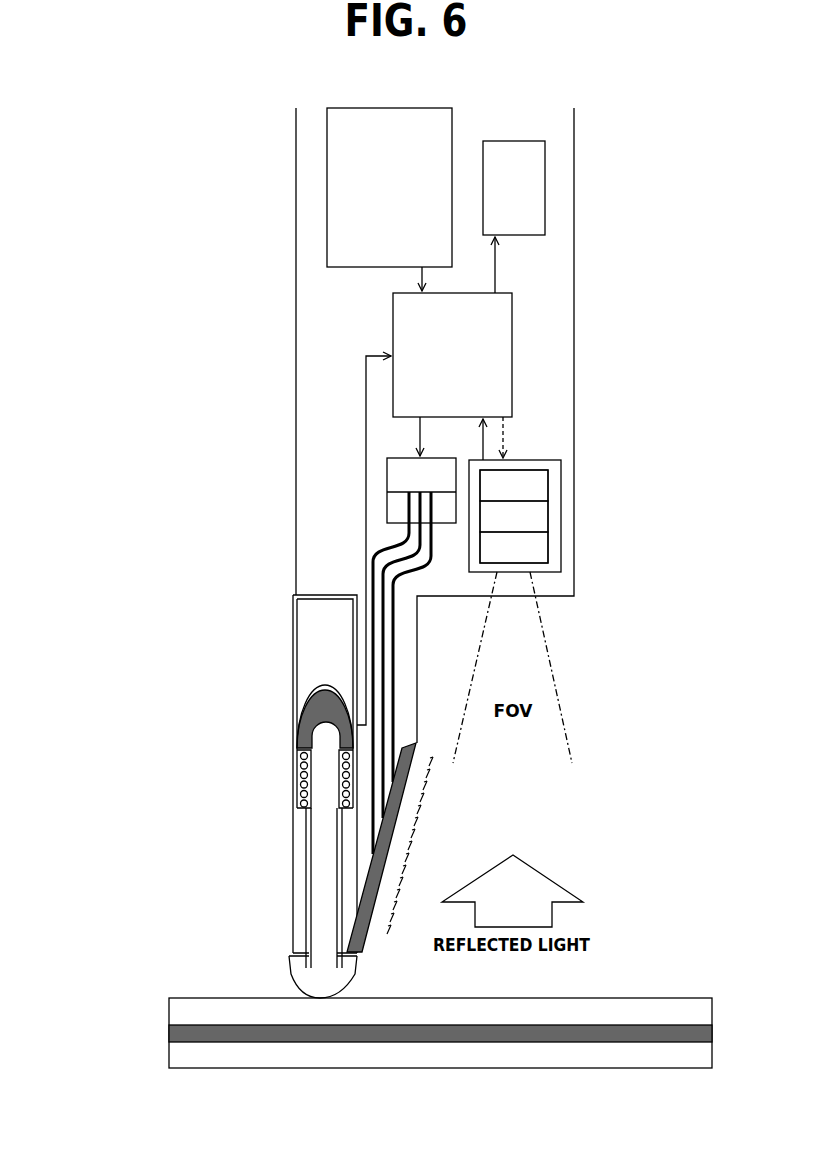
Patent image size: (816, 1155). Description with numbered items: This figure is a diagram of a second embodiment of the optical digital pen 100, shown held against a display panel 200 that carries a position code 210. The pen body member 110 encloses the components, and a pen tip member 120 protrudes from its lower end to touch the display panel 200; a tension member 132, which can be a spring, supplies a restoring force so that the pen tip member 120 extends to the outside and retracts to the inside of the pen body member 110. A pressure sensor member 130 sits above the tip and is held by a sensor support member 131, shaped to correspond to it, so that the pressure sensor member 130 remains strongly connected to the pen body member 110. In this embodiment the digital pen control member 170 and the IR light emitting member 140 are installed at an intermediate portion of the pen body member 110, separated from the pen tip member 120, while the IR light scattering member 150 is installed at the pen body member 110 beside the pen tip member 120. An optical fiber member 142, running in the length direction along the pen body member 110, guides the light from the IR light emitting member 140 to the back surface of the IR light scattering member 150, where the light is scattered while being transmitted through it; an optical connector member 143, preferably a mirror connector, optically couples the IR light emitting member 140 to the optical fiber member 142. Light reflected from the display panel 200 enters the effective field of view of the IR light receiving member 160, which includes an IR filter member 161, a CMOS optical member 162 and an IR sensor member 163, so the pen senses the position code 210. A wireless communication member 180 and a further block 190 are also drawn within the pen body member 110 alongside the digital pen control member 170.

The optical digital pen 100 is at (398, 425).
The pen body member 110 is at (296, 322).
The pen tip member 120 is at (290, 976).
The pressure sensor member 130 is at (293, 718).
The sensor support member 131 is at (325, 774).
The tension member 132 is at (297, 778).
The IR light emitting member 140 is at (421, 490).
The optical fiber member 142 is at (383, 562).
The optical connector member 143 is at (393, 508).
The IR light scattering member 150 is at (363, 908).
The IR light receiving member 160 is at (559, 516).
The IR filter member 161 is at (514, 485).
The CMOS optical member 162 is at (514, 516).
The IR sensor member 163 is at (514, 547).
The digital pen control member 170 is at (452, 355).
The wireless communication member 180 is at (514, 188).
The power supply 190 is at (389, 187).
The display panel 200 is at (399, 998).
The position code 210 is at (169, 1035).